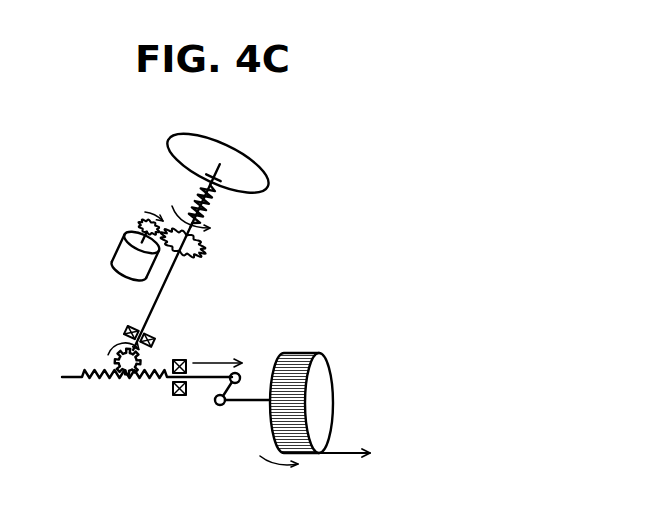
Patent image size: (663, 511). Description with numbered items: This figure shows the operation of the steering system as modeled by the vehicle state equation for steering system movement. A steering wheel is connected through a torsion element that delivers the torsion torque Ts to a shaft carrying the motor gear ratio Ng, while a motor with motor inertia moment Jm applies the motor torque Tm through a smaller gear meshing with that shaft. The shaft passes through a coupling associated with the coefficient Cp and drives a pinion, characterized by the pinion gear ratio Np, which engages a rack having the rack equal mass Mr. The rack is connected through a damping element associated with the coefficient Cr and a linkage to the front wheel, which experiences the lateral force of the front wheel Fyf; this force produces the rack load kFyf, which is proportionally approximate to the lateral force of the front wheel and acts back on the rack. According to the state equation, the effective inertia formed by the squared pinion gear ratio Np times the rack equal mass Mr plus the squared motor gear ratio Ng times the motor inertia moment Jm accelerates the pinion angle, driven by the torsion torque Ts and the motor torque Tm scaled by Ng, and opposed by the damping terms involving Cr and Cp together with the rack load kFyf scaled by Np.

The motor torque Tm is at (143, 207).
The motor inertia moment Jm is at (116, 247).
The torsion torque Ts is at (221, 213).
The motor gear ratio Ng is at (204, 236).
The coefficient Cp is at (131, 316).
The rack equal mass Mr is at (136, 365).
The pinion gear ratio Np is at (124, 381).
The rack load kFyf is at (216, 350).
The coefficient Cr is at (178, 393).
The lateral force of the front wheel Fyf is at (319, 410).